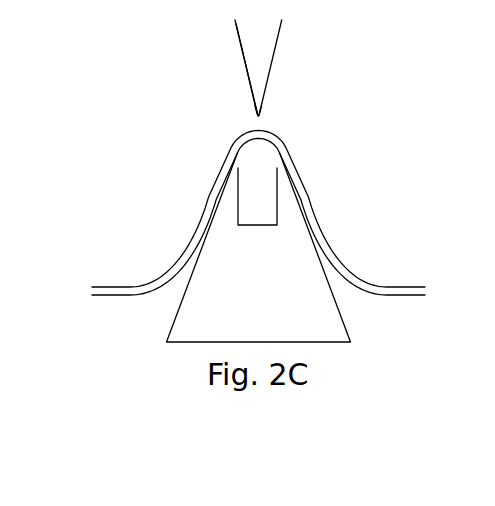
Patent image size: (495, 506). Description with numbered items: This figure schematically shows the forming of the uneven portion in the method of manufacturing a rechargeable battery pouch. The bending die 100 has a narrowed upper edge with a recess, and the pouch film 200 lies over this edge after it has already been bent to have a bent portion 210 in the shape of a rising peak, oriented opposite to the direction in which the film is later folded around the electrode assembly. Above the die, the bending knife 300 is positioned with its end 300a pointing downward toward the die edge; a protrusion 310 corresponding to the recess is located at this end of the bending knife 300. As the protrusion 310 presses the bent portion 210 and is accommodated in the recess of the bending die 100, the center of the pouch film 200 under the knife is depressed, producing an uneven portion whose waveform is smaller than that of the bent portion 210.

The bending die 100 is at (343, 322).
The pouch film 200 is at (290, 157).
The bent portion 210 is at (251, 131).
The bending knife 300 is at (280, 55).
The end of bending knife 300a is at (255, 115).
The protrusion 310 is at (262, 112).